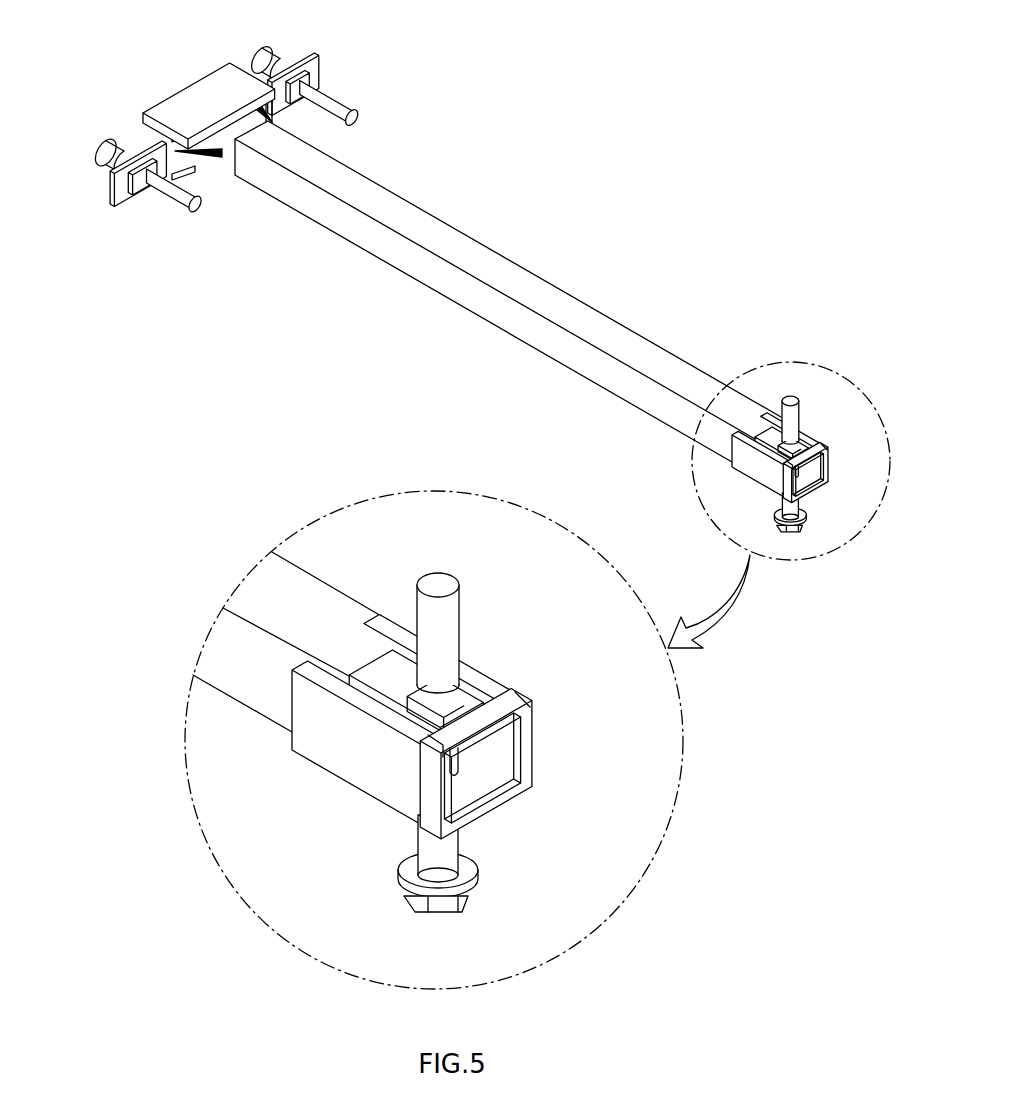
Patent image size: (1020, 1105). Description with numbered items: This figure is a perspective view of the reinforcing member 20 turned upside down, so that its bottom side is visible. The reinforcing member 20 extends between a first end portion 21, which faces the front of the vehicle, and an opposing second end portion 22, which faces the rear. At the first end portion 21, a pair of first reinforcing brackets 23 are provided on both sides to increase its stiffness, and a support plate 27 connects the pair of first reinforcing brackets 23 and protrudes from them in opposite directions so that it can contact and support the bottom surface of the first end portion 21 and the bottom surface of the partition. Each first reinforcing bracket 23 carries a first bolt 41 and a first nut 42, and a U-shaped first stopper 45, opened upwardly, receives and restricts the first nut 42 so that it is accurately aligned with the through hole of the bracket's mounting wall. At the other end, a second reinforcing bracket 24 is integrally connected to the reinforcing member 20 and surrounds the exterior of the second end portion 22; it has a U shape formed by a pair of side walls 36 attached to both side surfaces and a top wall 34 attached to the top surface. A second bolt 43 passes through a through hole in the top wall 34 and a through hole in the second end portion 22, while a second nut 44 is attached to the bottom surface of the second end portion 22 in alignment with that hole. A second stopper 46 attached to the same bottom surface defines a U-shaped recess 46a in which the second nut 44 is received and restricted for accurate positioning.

The reinforcing member 20 is at (520, 322).
The first end portion 21 is at (232, 182).
The second end portion 22 is at (554, 620).
The first reinforcing bracket 23 is at (223, 140).
The second reinforcing bracket 24 is at (520, 673).
The support plate 27 is at (212, 92).
The top wall 34 is at (502, 800).
The side wall 36 is at (357, 763).
The first bolt 41 is at (112, 155).
The first nut 42 is at (145, 187).
The second bolt 43 is at (427, 845).
The second nut 44 is at (467, 672).
The first stopper 45 is at (150, 150).
The second stopper 46 is at (517, 565).
The U-shaped recess 46a is at (393, 693).